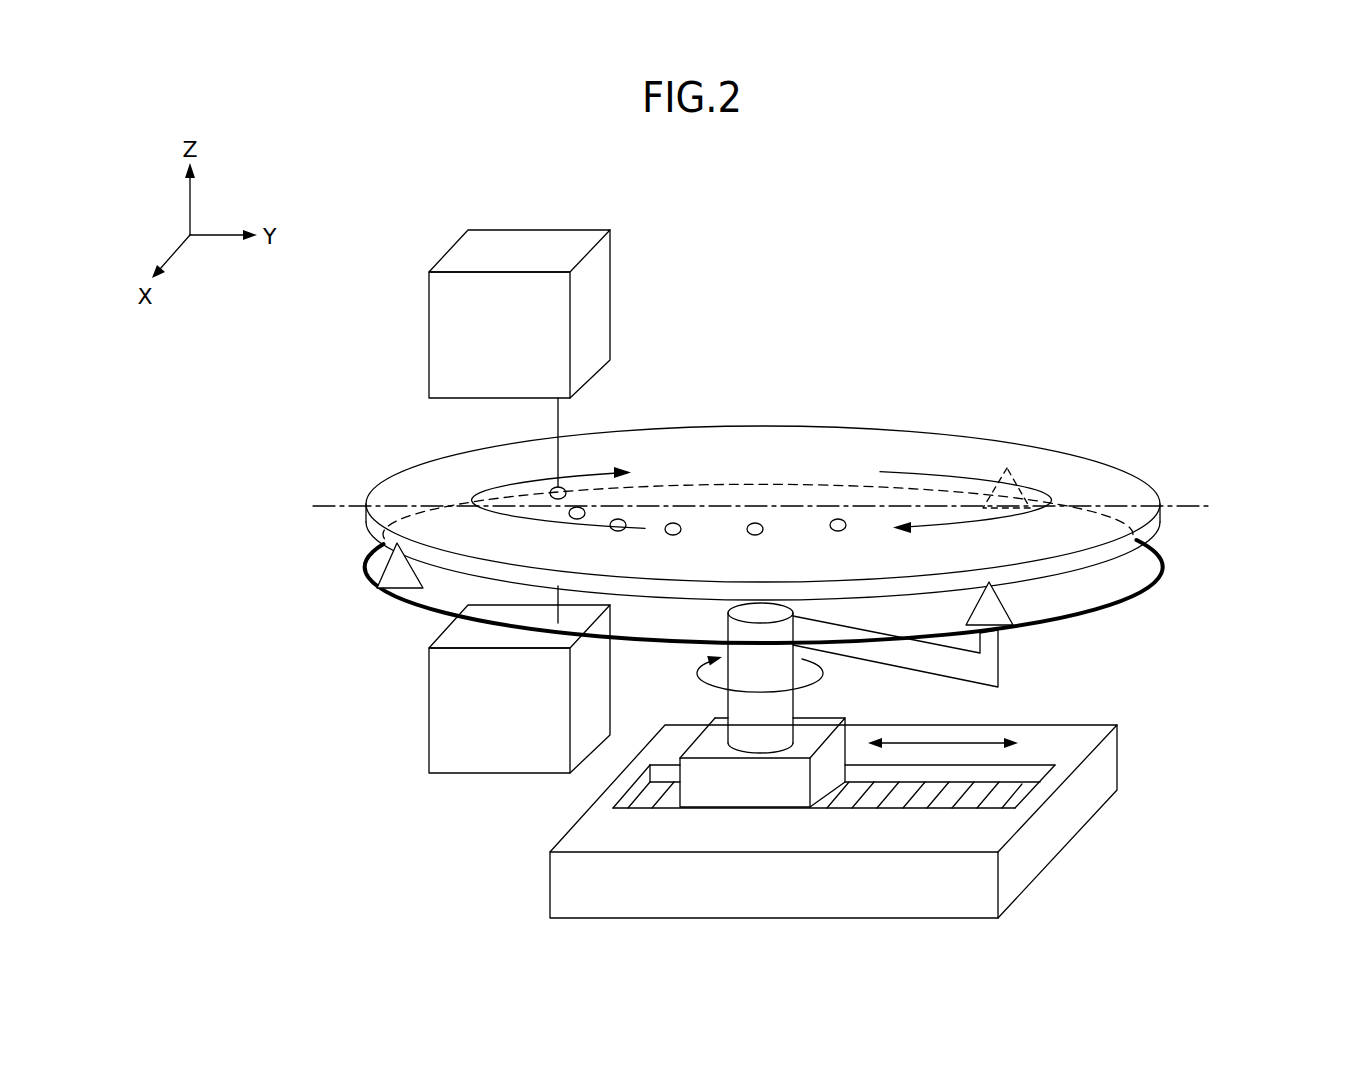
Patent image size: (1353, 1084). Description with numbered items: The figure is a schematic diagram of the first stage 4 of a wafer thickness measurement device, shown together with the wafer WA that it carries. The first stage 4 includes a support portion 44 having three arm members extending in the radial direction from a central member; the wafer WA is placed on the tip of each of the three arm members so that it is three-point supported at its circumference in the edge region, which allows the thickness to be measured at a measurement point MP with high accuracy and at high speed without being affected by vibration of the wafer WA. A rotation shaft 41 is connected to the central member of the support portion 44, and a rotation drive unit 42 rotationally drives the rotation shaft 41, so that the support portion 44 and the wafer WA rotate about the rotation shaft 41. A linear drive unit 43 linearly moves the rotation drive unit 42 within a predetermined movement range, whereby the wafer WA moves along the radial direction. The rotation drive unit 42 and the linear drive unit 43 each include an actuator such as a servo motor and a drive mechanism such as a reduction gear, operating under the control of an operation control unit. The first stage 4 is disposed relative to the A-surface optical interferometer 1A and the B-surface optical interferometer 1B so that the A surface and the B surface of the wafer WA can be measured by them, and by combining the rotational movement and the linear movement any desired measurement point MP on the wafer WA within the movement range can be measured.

The A-surface optical interferometer 1A is at (429, 327).
The B-surface optical interferometer 1B is at (429, 706).
The measurement point MP is at (566, 484).
The wafer WA is at (1070, 452).
The first stage 4 is at (1197, 544).
The rotation shaft 41 is at (728, 700).
The rotation drive unit 42 is at (827, 727).
The linear drive unit 43 is at (1025, 723).
The support portion 44 is at (385, 544).